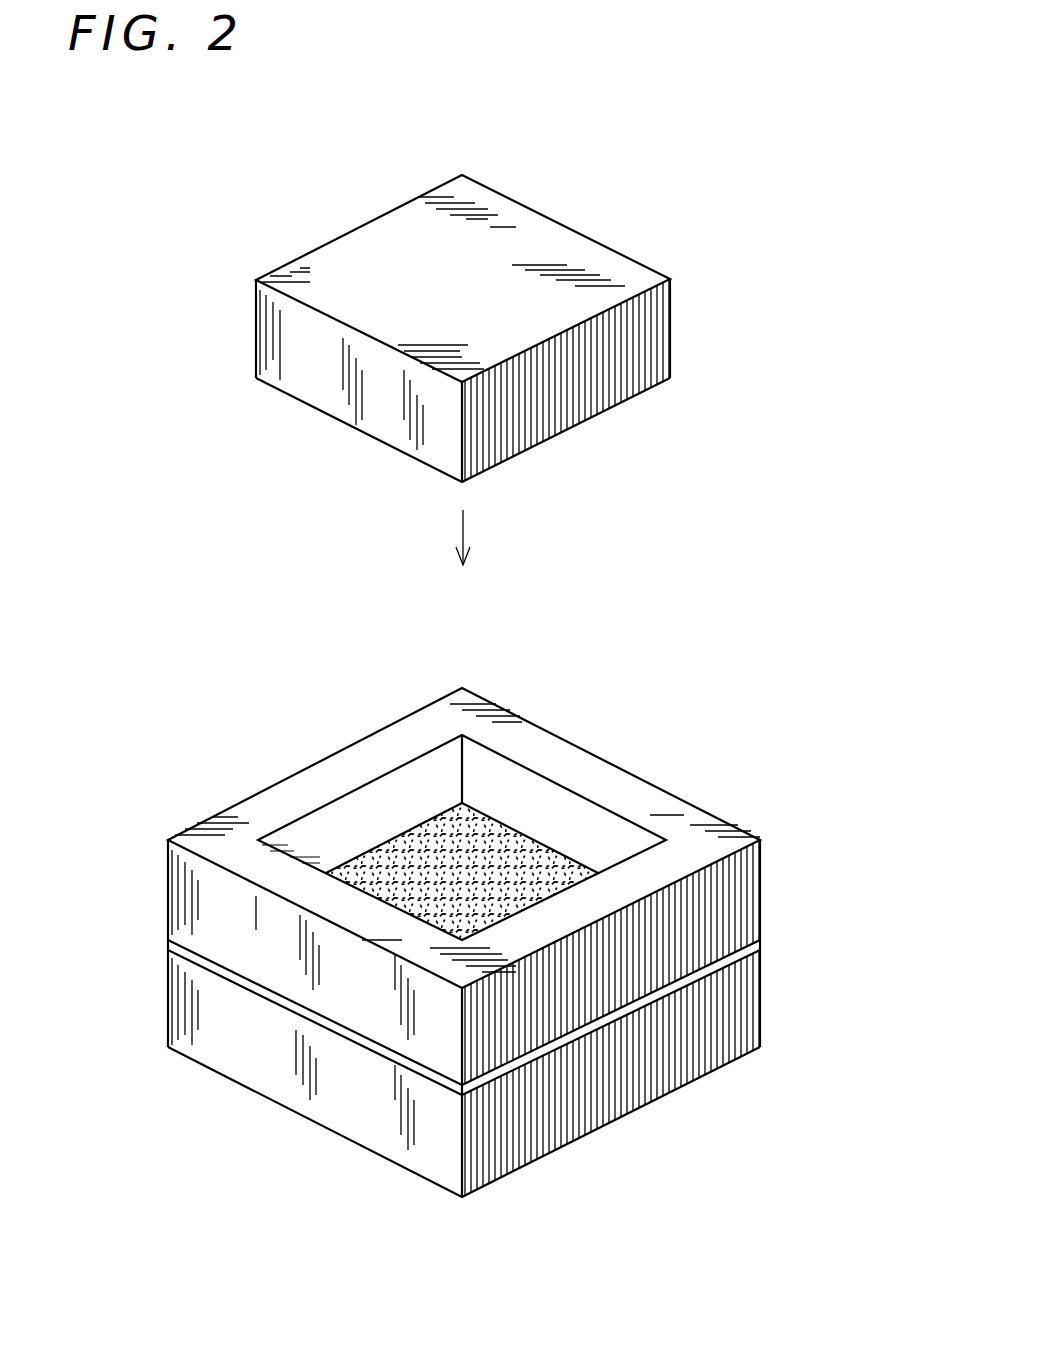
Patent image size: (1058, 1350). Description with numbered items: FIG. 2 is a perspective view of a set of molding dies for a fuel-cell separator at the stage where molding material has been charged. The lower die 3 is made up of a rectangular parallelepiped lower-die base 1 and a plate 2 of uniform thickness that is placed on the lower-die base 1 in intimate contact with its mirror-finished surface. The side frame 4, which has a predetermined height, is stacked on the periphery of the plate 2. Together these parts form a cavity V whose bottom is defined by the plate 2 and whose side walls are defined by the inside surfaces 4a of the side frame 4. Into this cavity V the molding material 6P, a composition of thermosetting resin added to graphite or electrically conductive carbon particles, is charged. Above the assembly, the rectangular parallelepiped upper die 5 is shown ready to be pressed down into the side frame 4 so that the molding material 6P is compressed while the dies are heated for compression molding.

The lower-die base 1 is at (509, 1073).
The plate 2 is at (762, 940).
The lower die 3 is at (550, 1047).
The side frame 4 is at (521, 852).
The inside surfaces 4a is at (597, 844).
The upper die 5 is at (633, 257).
The molding material 6P is at (497, 827).
The cavity V is at (407, 808).